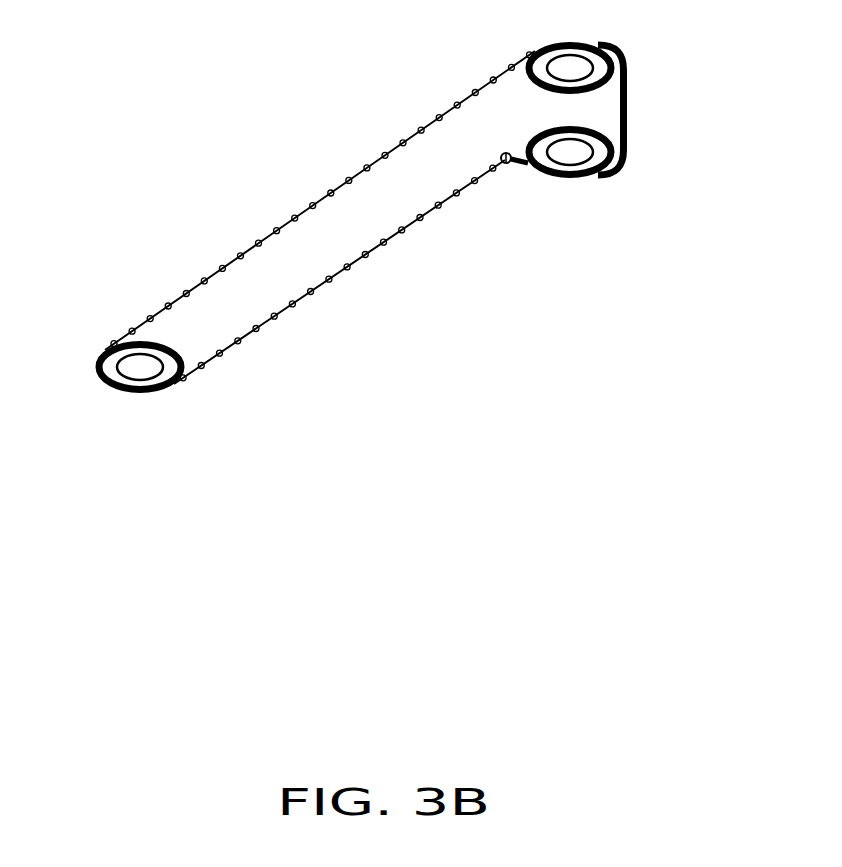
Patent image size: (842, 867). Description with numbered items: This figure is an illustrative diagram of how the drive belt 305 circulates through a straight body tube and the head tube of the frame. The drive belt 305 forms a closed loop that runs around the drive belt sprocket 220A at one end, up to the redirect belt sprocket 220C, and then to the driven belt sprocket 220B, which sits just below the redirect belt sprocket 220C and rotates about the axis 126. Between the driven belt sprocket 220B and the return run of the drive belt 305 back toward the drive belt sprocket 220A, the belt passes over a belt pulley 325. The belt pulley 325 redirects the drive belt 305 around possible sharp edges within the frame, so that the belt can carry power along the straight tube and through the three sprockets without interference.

The drive belt 305 is at (352, 265).
The drive belt sprocket 220A is at (168, 350).
The driven belt sprocket 220B is at (578, 175).
The redirect belt sprocket 220C is at (598, 47).
The axis 126 is at (568, 153).
The belt pulley 325 is at (505, 162).